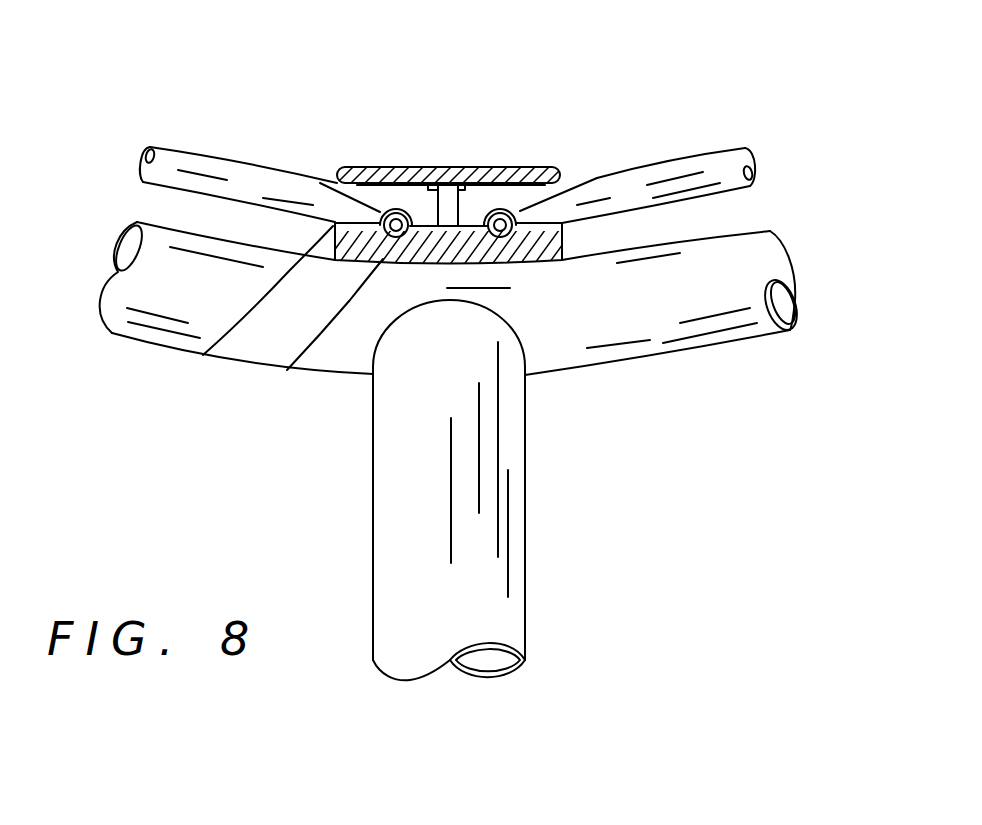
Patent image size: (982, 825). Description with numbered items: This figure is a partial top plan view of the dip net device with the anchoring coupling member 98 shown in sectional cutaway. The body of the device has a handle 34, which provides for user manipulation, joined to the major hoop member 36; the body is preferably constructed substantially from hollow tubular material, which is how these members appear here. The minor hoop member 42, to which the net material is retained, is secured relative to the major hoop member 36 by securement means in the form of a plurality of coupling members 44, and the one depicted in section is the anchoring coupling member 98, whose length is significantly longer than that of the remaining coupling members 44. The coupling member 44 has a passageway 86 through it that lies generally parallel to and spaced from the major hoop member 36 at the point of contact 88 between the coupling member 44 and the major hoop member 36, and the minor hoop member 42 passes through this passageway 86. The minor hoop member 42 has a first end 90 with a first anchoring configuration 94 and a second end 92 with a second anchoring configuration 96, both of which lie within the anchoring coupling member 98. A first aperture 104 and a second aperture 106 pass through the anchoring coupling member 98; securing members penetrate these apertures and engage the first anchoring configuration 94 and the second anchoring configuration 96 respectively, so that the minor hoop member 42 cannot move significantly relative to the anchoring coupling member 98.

The handle 34 is at (525, 533).
The major hoop member 36 is at (723, 353).
The minor hoop member 42 is at (641, 150).
The coupling member 44 is at (448, 133).
The passageway 86 is at (203, 355).
The point of contact 88 is at (396, 226).
The first end 90 is at (428, 193).
The second end 92 is at (465, 193).
The first anchoring configuration 94 is at (320, 183).
The second anchoring configuration 96 is at (597, 177).
The anchoring coupling member 98 is at (375, 167).
The first aperture 104 is at (287, 370).
The second aperture 106 is at (500, 226).